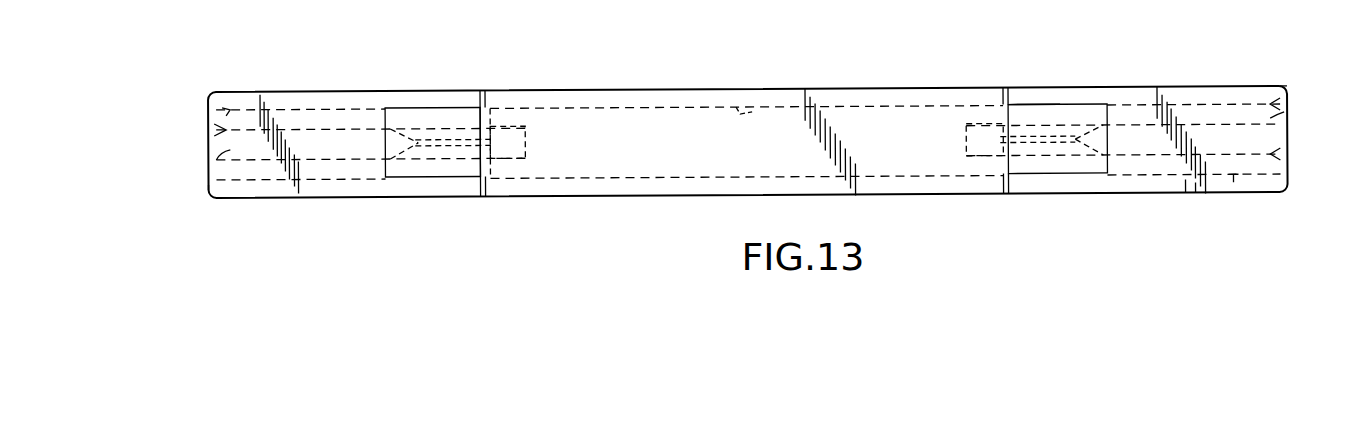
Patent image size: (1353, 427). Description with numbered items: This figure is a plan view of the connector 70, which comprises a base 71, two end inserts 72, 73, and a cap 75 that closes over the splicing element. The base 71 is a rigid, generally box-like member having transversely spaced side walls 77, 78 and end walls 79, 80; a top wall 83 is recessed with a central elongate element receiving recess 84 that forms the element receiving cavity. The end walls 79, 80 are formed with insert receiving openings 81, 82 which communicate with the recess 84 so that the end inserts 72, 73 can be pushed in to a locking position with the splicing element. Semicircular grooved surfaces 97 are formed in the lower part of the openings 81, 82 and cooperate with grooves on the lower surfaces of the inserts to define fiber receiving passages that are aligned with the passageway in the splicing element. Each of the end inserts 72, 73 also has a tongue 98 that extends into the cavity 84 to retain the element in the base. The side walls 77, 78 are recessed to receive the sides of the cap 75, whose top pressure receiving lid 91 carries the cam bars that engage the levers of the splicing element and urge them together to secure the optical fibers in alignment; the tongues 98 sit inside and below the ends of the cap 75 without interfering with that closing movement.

The connector 70 is at (1186, 62).
The base 71 is at (1187, 198).
The end insert 72 is at (326, 182).
The end insert 73 is at (1233, 186).
The cap 75 is at (843, 90).
The side wall 77 is at (1070, 194).
The side wall 78 is at (1046, 88).
The end wall 79 is at (208, 190).
The end wall 80 is at (1291, 96).
The insert receiving opening 81 is at (197, 117).
The insert receiving opening 82 is at (1290, 117).
The top wall 83 is at (1133, 88).
The element receiving recess 84 is at (749, 106).
The pressure receiving lid 91 is at (686, 164).
The semicircular grooved surface 97 is at (208, 150).
The tongue 98 is at (527, 110).